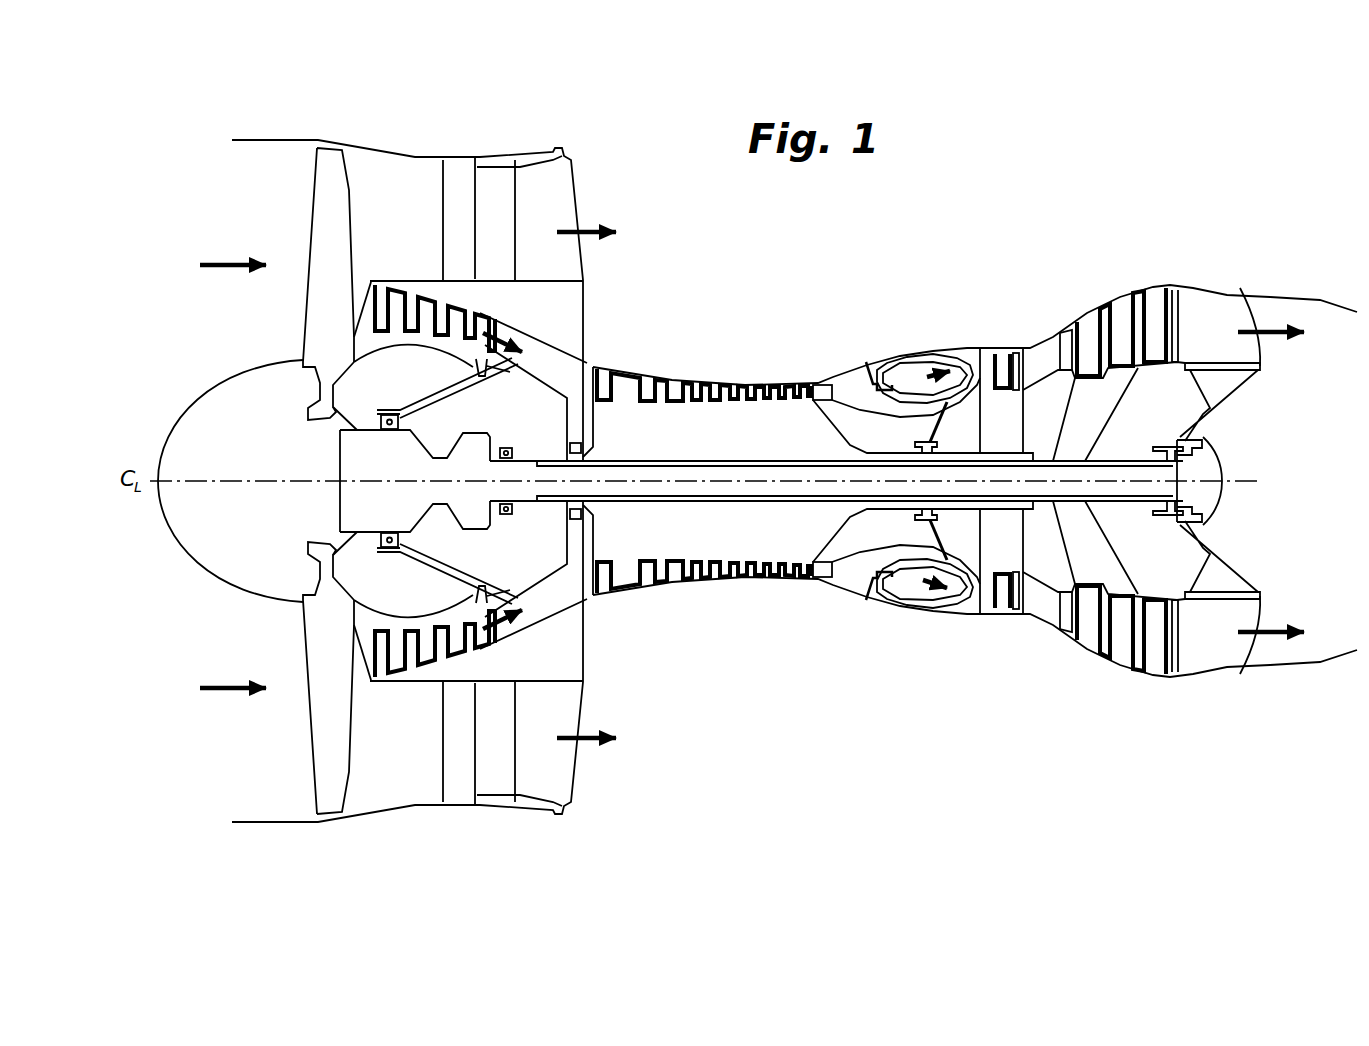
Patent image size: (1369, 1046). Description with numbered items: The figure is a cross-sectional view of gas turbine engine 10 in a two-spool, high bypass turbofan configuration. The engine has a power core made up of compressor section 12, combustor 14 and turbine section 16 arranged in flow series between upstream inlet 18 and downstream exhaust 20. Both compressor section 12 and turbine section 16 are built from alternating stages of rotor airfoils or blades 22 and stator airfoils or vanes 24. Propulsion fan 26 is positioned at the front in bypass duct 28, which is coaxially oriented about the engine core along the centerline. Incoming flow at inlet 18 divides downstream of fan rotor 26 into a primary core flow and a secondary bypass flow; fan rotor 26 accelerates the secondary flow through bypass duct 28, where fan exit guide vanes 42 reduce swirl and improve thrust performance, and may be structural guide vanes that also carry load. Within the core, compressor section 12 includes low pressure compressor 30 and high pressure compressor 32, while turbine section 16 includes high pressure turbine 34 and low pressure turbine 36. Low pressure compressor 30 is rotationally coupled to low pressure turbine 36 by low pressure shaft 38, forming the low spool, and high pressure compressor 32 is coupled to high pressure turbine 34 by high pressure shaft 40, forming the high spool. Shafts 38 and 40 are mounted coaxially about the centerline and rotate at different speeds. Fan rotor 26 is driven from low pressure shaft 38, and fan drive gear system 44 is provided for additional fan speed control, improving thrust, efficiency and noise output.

The gas turbine engine 10 is at (207, 117).
The compressor section 12 is at (823, 833).
The combustor 14 is at (923, 350).
The turbine section 16 is at (1192, 717).
The upstream inlet 18 is at (217, 363).
The downstream exhaust 20 is at (1307, 434).
The rotor airfoils 22 is at (635, 380).
The stator airfoils 24 is at (675, 380).
The propulsion fan 26 is at (323, 227).
The bypass duct 28 is at (420, 231).
The low pressure compressor 30 is at (528, 641).
The high pressure compressor 32 is at (725, 588).
The high pressure turbine 34 is at (1008, 623).
The low pressure turbine 36 is at (1086, 661).
The low pressure shaft 38 is at (753, 493).
The high pressure shaft 40 is at (837, 513).
The fan exit guide vanes 42 is at (453, 175).
The fan drive gear system 44 is at (480, 423).